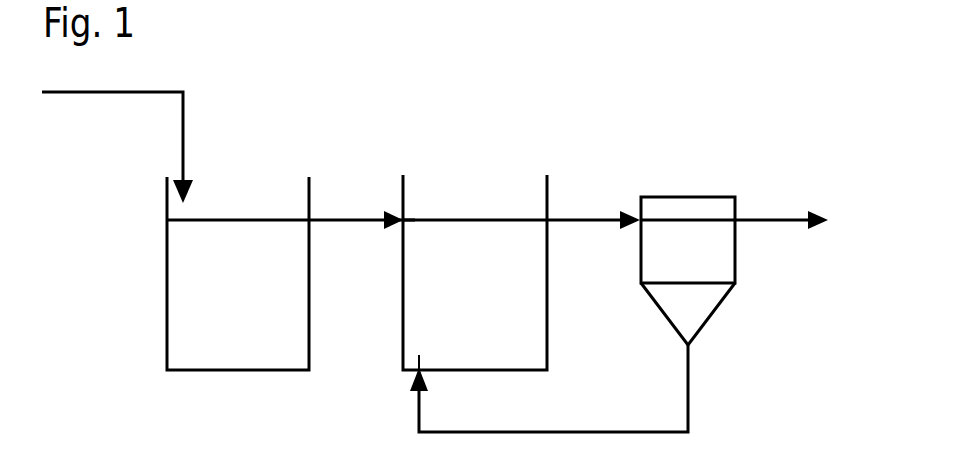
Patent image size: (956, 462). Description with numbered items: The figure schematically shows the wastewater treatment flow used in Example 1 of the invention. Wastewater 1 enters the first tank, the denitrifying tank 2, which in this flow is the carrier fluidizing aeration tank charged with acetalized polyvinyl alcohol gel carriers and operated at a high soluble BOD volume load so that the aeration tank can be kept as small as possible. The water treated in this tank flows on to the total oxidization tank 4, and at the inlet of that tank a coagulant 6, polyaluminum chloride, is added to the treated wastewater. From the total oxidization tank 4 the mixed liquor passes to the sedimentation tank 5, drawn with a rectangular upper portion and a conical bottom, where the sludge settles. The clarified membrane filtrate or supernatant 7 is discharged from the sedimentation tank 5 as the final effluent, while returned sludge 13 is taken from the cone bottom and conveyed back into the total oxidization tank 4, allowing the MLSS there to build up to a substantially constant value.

The wastewater 1 is at (135, 97).
The denitrifying tank 2 is at (278, 377).
The total oxidization tank 4 is at (417, 378).
The sedimentation tank 5 is at (735, 270).
The coagulant 6 is at (395, 198).
The membrane filtrate or supernatant 7 is at (734, 203).
The returned sludge 13 is at (549, 388).